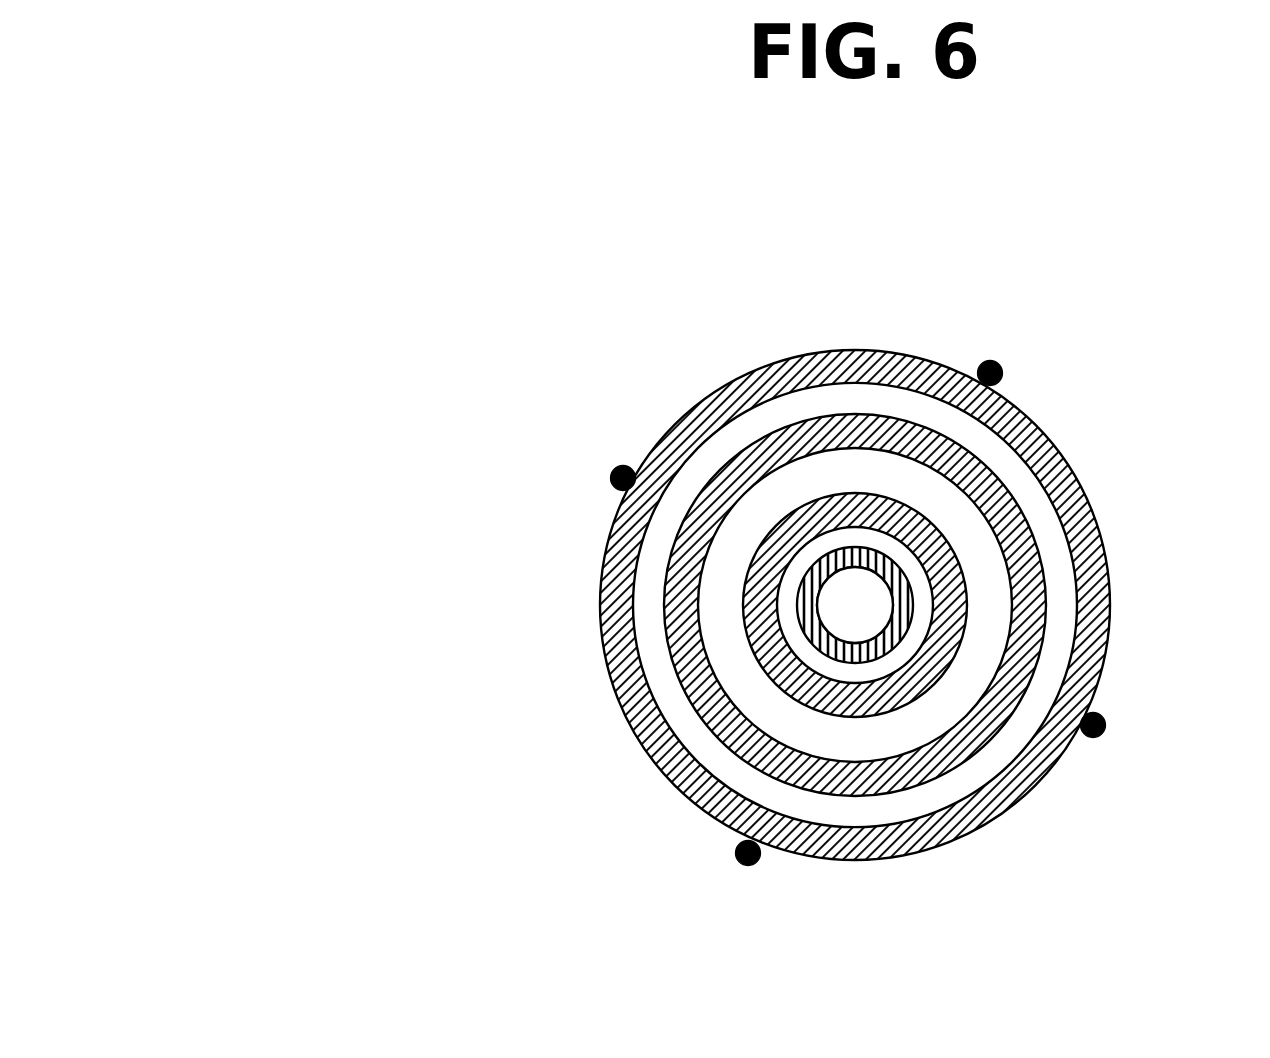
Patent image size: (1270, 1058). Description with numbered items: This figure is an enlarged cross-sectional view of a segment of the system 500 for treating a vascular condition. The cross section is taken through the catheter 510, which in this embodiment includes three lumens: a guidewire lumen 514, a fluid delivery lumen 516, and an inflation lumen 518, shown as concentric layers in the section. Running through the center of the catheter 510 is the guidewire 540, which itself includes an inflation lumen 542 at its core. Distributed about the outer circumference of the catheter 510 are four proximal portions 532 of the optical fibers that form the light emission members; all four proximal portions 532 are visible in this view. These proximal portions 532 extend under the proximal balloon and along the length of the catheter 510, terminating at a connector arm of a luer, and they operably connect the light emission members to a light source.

The system for treating a vascular condition 500 is at (144, 185).
The catheter 510 is at (668, 348).
The guidewire lumen 514 is at (790, 589).
The fluid delivery lumen 516 is at (736, 664).
The inflation lumen 518 is at (692, 738).
The proximal portions of optical fibers 532 is at (1000, 362).
The guidewire 540 is at (912, 580).
The inflation lumen of guidewire 542 is at (865, 620).